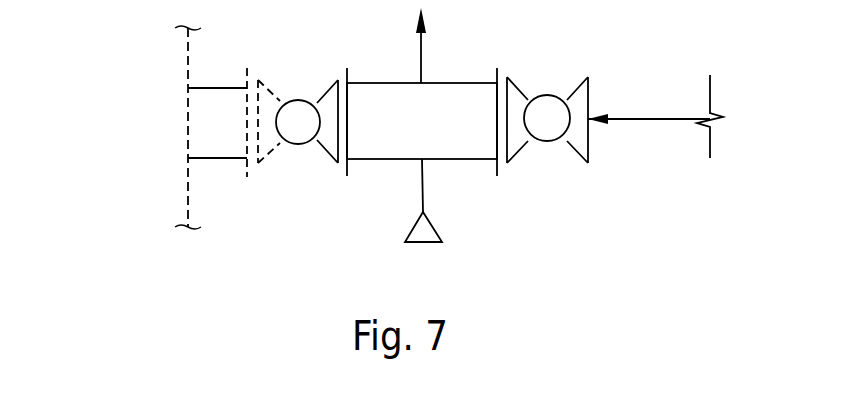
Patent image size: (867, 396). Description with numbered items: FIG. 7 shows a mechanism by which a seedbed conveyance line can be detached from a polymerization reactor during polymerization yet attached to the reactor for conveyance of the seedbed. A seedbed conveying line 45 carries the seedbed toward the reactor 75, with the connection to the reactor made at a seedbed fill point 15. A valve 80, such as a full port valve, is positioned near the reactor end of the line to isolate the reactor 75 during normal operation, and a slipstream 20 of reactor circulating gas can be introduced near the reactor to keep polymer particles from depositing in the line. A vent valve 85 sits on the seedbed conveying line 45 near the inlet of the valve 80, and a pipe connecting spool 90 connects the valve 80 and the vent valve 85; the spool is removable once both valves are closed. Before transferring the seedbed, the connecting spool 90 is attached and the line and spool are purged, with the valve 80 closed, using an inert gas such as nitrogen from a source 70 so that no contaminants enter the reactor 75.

The seedbed fill point 15 is at (582, 232).
The slipstream 20 is at (282, 85).
The seedbed conveying line 45 is at (635, 120).
The source 70 is at (423, 187).
The reactor 75 is at (187, 113).
The valve 80 is at (300, 143).
The vent valve 85 is at (548, 97).
The pipe connecting spool 90 is at (458, 83).